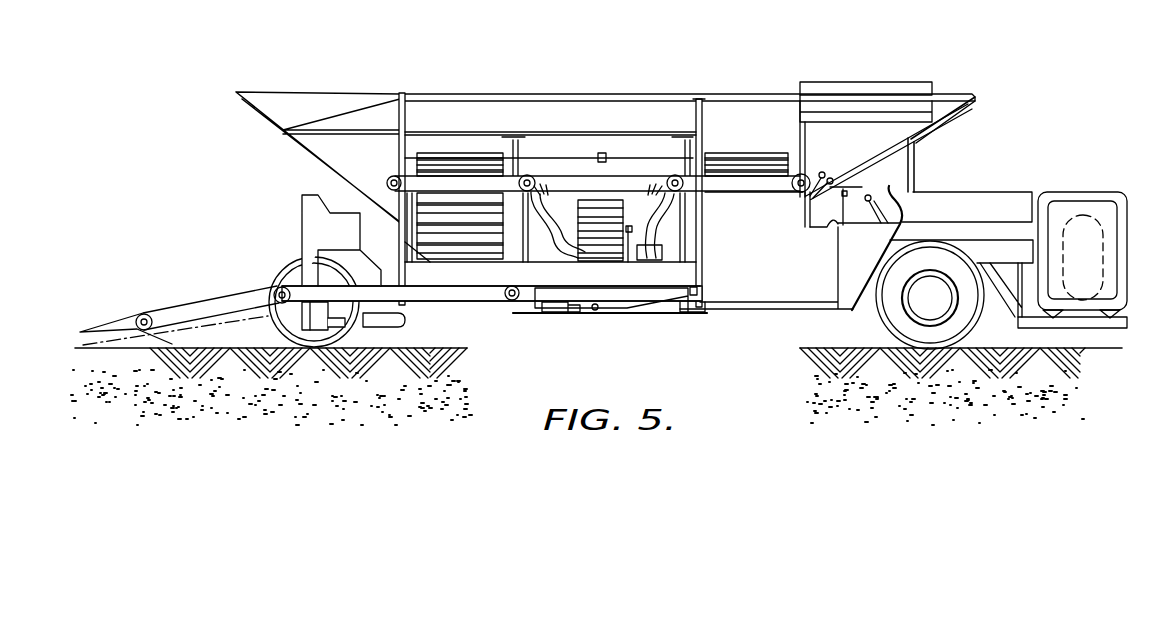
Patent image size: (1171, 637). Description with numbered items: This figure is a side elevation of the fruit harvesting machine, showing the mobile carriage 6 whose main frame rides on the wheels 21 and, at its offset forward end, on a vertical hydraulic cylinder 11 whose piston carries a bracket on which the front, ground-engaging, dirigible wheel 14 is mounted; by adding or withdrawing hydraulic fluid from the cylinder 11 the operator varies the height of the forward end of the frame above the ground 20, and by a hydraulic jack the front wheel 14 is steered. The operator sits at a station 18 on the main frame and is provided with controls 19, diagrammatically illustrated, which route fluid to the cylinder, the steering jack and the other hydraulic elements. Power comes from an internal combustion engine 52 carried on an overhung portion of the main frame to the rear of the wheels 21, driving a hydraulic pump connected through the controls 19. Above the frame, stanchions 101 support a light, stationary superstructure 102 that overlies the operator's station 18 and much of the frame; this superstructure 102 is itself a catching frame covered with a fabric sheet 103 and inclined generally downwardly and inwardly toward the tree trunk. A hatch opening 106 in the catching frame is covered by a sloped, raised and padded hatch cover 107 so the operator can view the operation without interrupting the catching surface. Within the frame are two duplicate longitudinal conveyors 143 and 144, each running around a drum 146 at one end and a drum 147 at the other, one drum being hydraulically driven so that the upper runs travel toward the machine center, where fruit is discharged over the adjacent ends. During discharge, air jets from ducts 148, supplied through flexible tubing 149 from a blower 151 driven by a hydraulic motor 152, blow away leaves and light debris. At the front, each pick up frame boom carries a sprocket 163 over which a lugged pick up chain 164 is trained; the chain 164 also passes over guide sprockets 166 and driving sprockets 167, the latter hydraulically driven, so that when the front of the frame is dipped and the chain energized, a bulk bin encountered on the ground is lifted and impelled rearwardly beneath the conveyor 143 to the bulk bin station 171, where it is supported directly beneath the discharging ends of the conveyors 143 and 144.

The carriage 6 is at (731, 298).
The hydraulic cylinder 11 is at (302, 205).
The front ground-engaging dirigible wheel 14 is at (352, 327).
The operator's station 18 is at (887, 188).
The controls 19 is at (824, 178).
The ground 20 is at (440, 348).
The wheels 21 is at (978, 333).
The internal combustion engine 52 is at (1103, 259).
The stanchions 101 is at (404, 98).
The superstructure 102 is at (547, 94).
The fabric sheet 103 is at (503, 113).
The hatch opening 106 is at (905, 101).
The hatch cover 107 is at (850, 82).
The longitudinal conveyor 143 is at (437, 176).
The longitudinal conveyor 144 is at (733, 160).
The drum 146 is at (392, 176).
The drum 147 is at (530, 175).
The ducts 148 is at (548, 196).
The flexible tubing 149 is at (543, 240).
The blower 151 is at (600, 249).
The hydraulic motor 152 is at (650, 262).
The sprocket 163 is at (137, 319).
The pick up chain 164 is at (200, 305).
The guide sprockets 166 is at (292, 263).
The driving sprockets 167 is at (517, 287).
The bulk bin station 171 is at (596, 312).